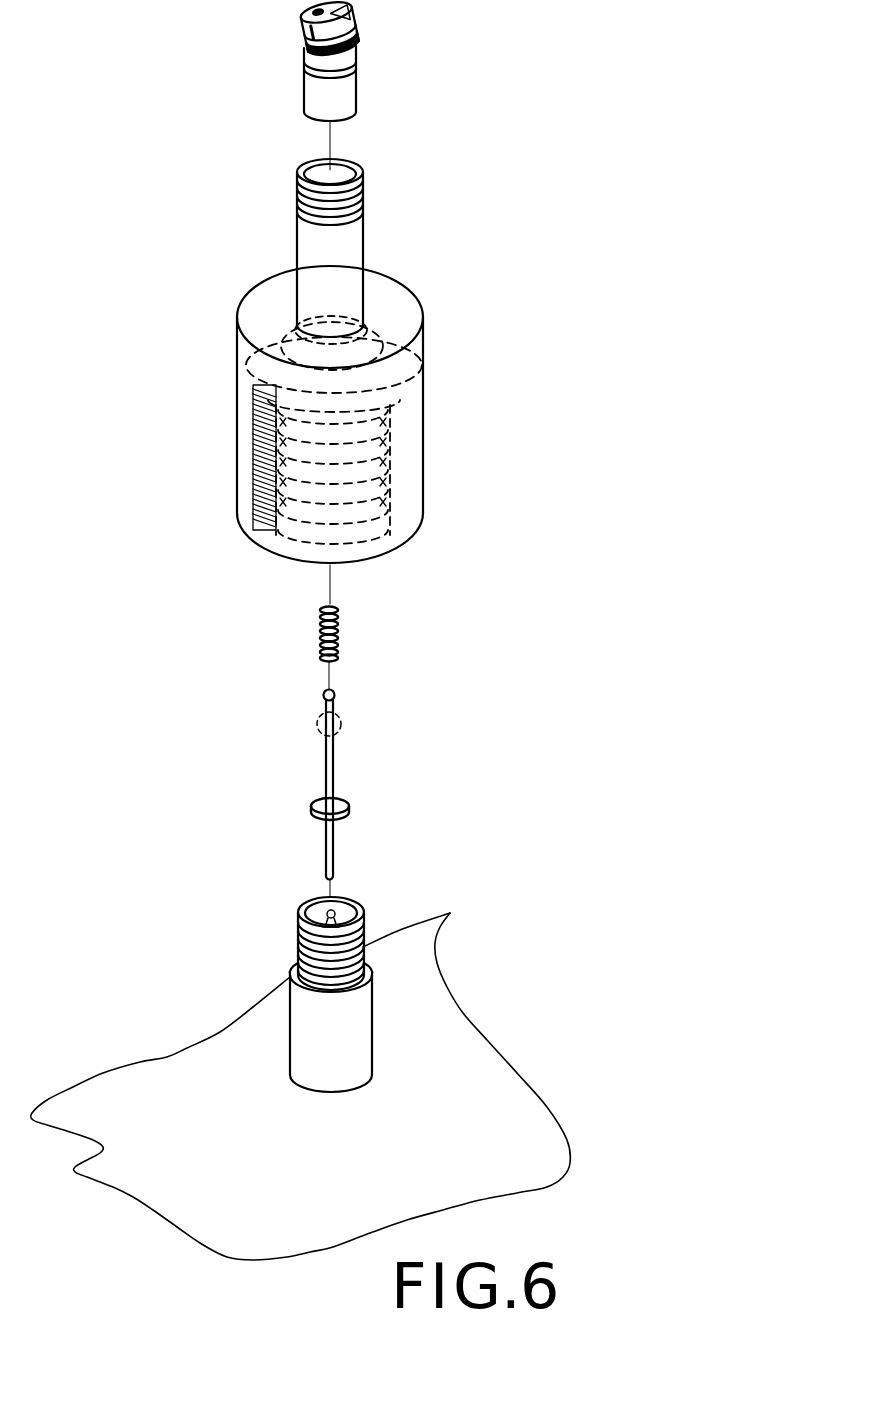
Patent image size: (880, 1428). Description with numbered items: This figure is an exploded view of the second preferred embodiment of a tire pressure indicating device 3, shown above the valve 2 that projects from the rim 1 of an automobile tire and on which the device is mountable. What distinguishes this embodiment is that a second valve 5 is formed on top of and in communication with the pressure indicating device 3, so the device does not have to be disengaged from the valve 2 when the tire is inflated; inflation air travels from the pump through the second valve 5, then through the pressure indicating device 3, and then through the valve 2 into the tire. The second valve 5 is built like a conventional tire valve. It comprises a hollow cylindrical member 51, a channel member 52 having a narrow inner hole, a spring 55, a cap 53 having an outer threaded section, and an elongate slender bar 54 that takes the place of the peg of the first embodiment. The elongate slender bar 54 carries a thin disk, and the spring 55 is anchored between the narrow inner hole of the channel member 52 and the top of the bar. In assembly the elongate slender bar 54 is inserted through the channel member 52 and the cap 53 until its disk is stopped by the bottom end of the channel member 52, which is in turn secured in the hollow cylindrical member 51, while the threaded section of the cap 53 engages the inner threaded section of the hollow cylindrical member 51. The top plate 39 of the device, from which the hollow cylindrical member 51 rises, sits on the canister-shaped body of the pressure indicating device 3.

The rim 1 is at (178, 1077).
The valve 2 is at (360, 1030).
The pressure indicating device 3 is at (377, 435).
The second valve 5 is at (486, 184).
The top plate 39 is at (423, 345).
The hollow cylindrical member 51 is at (343, 263).
The channel member 52 is at (343, 98).
The cap 53 is at (342, 62).
The elongate slender bar 54 is at (333, 770).
The spring 55 is at (340, 635).